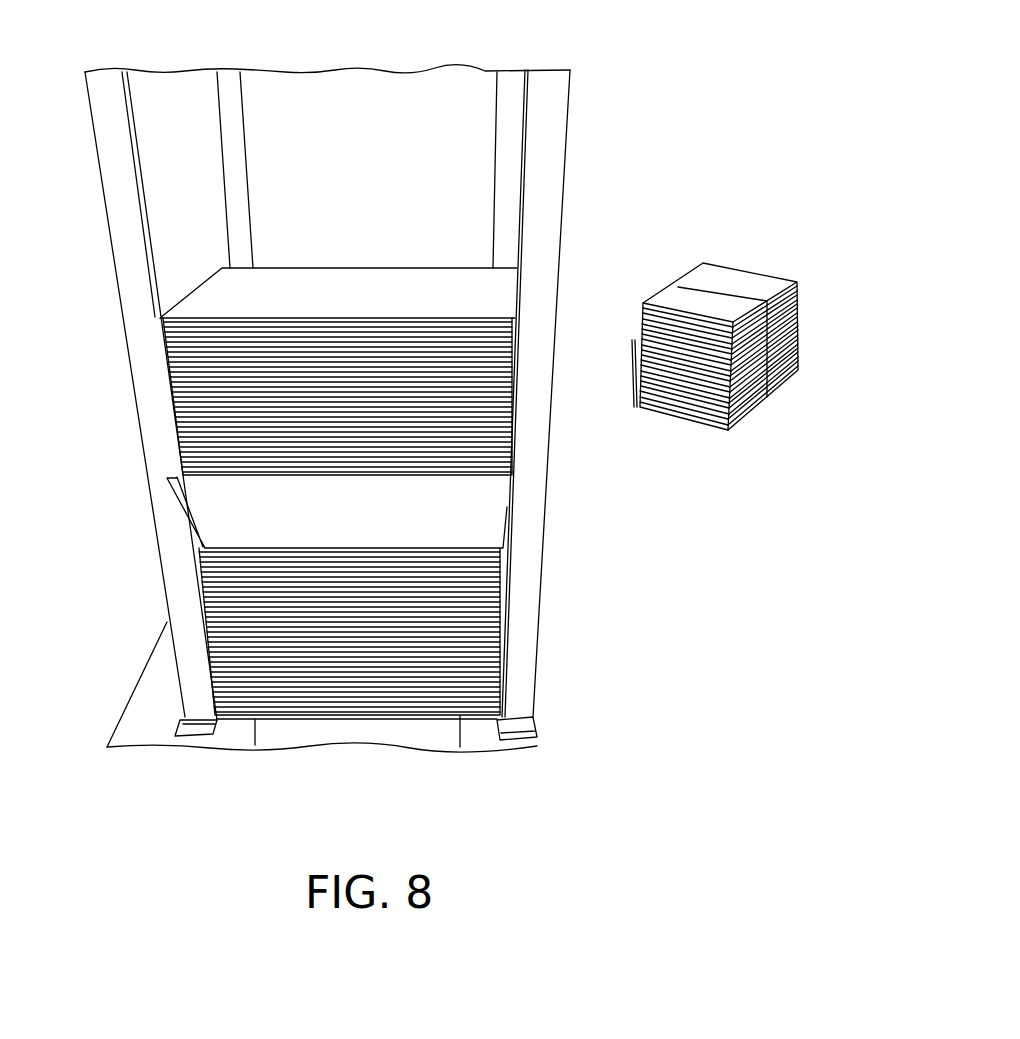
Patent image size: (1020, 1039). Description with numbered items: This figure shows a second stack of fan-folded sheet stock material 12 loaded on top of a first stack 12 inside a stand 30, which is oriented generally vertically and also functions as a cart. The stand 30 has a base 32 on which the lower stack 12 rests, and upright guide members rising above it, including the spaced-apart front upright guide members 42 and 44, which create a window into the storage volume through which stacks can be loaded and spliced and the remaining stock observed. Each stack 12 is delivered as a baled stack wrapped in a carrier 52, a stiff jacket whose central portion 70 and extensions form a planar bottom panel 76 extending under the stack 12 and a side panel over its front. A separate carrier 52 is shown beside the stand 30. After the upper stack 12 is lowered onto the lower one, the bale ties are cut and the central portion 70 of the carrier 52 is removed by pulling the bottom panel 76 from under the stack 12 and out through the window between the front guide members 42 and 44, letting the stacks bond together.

The stand 30 is at (552, 113).
The stack of fan-folded sheet stock material 12 is at (203, 305).
The carrier 52 is at (793, 325).
The bottom panel 76 is at (188, 488).
The central portion 70 is at (235, 510).
The front upright guide member 42 is at (180, 578).
The front upright guide member 44 is at (523, 582).
The base 32 is at (230, 730).